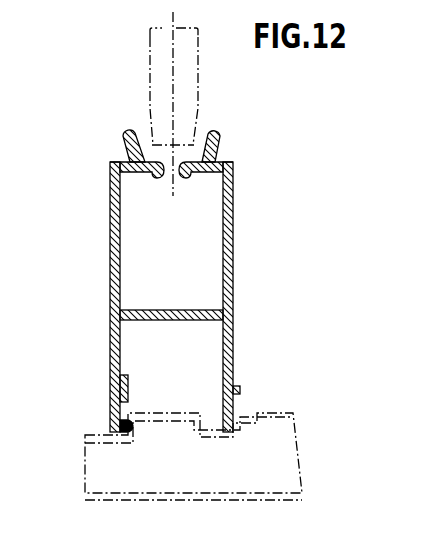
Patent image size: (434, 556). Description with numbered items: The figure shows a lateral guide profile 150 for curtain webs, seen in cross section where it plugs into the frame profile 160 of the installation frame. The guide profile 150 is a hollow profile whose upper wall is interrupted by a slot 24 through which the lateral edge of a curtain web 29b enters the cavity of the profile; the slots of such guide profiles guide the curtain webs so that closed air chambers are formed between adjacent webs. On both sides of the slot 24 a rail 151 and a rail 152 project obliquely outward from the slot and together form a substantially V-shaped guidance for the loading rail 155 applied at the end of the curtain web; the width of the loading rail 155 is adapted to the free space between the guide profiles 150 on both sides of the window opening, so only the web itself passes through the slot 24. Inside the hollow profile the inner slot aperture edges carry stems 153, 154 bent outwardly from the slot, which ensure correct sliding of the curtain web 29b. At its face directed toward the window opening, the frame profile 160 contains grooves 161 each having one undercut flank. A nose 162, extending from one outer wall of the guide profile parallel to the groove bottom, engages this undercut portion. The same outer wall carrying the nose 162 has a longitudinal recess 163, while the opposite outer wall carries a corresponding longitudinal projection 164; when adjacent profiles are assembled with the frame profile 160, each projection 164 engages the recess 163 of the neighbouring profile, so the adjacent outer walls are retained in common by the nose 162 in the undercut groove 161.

The slot 24 is at (172, 176).
The curtain web 29b is at (173, 195).
The guide profile 150 is at (165, 300).
The rail 151 is at (124, 134).
The rail 152 is at (220, 138).
The stem 153 is at (156, 178).
The stem 154 is at (185, 178).
The loading rail 155 is at (190, 75).
The frame profile 160 is at (163, 474).
The groove 161 is at (212, 434).
The nose 162 is at (130, 434).
The longitudinal recess 163 is at (110, 389).
The longitudinal projection 164 is at (240, 390).